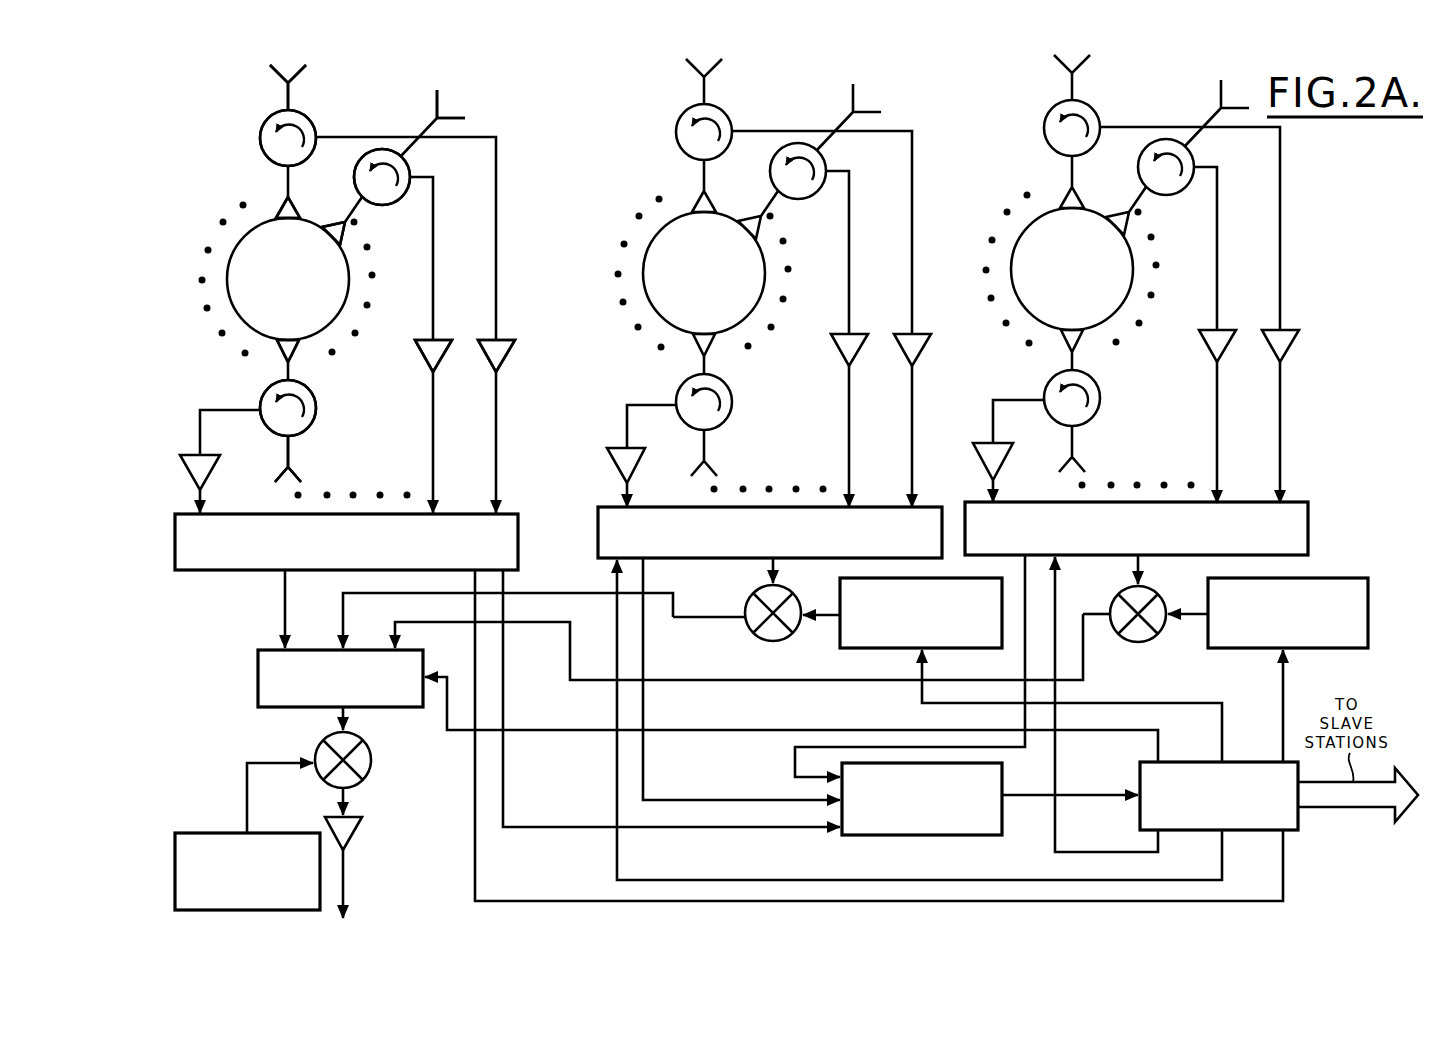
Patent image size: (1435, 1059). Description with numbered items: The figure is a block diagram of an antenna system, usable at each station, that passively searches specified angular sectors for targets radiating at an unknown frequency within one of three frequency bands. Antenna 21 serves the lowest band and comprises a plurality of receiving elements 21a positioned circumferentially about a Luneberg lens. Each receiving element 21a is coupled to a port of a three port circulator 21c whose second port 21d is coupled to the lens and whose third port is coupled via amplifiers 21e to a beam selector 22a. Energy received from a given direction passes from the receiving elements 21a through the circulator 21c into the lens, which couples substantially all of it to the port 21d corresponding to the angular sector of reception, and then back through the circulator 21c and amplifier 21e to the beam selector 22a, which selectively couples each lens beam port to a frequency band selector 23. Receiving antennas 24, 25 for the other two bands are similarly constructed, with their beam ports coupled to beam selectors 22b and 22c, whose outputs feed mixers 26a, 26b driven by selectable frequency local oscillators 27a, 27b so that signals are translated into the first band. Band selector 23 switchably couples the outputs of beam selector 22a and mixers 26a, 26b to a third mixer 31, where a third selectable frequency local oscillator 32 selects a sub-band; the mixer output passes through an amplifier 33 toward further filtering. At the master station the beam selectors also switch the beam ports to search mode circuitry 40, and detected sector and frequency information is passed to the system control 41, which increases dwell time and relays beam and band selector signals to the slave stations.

The antenna 21 is at (232, 130).
The receiving elements 21a is at (309, 72).
The three port circulator 21c is at (309, 118).
The second port 21d is at (277, 204).
The amplifiers 21e is at (217, 468).
The beam selector 22a is at (238, 572).
The beam selector 22b is at (598, 545).
The beam selector 22c is at (1308, 522).
The frequency band selector 23 is at (258, 685).
The receiving antenna 24 is at (664, 112).
The receiving antenna 25 is at (1034, 113).
The mixer 26a is at (752, 597).
The mixer 26b is at (1137, 642).
The local oscillator 27a is at (840, 640).
The local oscillator 27b is at (1340, 578).
The third mixer 31 is at (316, 749).
The third selectable frequency local oscillator 32 is at (197, 833).
The amplifier 33 is at (360, 832).
The search mode circuitry 40 is at (916, 835).
The system control 41 is at (1250, 762).